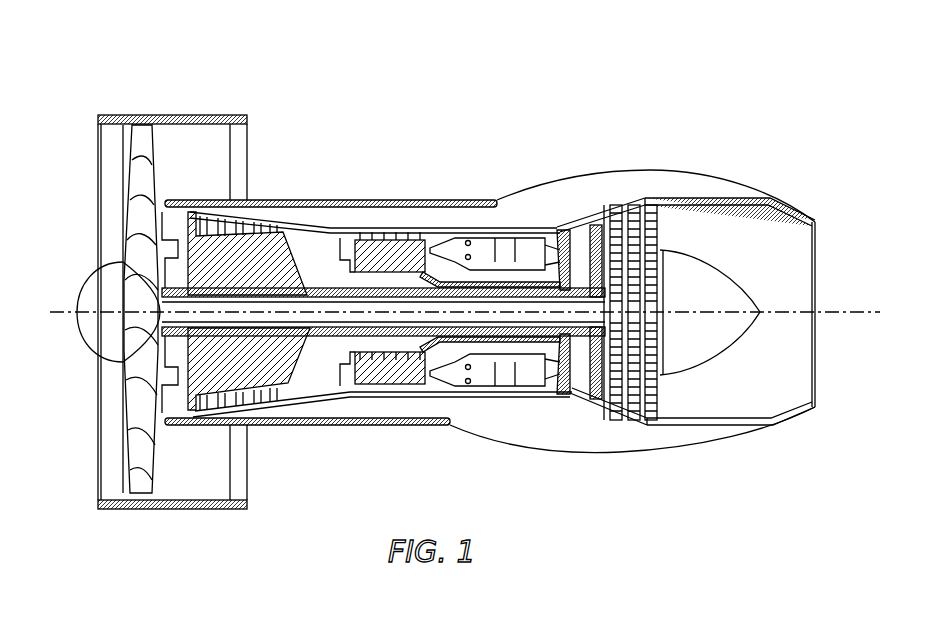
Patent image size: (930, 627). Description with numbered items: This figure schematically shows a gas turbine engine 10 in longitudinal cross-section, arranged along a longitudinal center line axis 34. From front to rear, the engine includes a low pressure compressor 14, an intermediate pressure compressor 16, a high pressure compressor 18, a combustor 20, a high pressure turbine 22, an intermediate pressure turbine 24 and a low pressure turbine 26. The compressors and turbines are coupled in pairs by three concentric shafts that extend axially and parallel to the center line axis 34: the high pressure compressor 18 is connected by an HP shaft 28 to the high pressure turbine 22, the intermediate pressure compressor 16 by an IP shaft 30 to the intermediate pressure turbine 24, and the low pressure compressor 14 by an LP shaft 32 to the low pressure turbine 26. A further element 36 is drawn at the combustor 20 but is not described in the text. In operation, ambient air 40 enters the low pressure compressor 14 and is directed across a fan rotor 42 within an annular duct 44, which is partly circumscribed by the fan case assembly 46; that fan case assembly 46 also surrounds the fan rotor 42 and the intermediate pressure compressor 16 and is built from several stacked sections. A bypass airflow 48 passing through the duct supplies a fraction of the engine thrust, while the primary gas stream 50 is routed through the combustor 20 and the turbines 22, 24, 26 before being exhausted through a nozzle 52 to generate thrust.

The gas turbine engine 10 is at (591, 46).
The low pressure compressor 14 is at (140, 484).
The intermediate pressure compressor 16 is at (272, 262).
The high pressure compressor 18 is at (392, 372).
The combustor 20 is at (481, 387).
The high pressure turbine 22 is at (560, 232).
The intermediate pressure turbine 24 is at (598, 225).
The low pressure turbine 26 is at (660, 218).
The HP shaft 28 is at (500, 352).
The IP shaft 30 is at (323, 314).
The LP shaft 32 is at (575, 382).
The longitudinal center line axis 34 is at (843, 304).
The fuel nozzle 36 is at (465, 384).
The ambient air 40 is at (82, 152).
The fan rotor 42 is at (118, 243).
The annular duct 44 is at (232, 470).
The fan case assembly 46 is at (188, 509).
The bypass airflow 48 is at (200, 152).
The primary gas stream 50 is at (350, 250).
The nozzle 52 is at (783, 206).